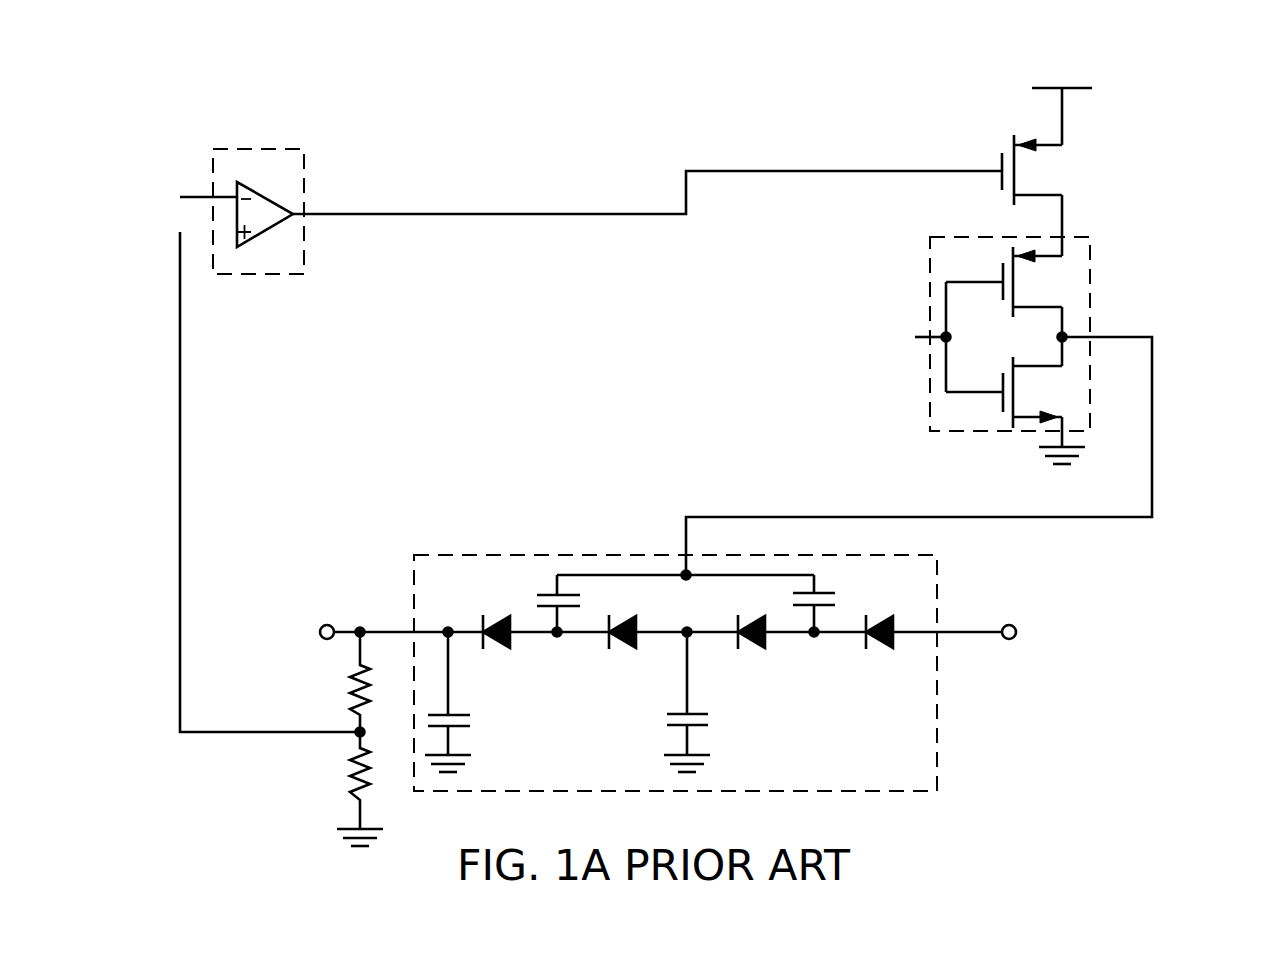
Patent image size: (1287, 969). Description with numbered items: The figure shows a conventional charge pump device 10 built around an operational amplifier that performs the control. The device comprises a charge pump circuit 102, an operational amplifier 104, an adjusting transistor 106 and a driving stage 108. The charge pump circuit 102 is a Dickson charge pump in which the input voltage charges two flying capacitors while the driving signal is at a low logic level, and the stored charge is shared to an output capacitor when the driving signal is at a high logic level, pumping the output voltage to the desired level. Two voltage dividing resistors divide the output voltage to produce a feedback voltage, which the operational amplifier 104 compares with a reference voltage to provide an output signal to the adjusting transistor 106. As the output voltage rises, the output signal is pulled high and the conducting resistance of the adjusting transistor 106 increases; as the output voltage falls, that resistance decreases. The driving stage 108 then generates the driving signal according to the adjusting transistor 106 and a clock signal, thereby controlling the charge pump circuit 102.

The charge pump device 10 is at (1182, 120).
The charge pump circuit 102 is at (937, 590).
The operational amplifier 104 is at (290, 148).
The adjusting transistor 106 is at (1064, 178).
The driving stage 108 is at (1090, 270).